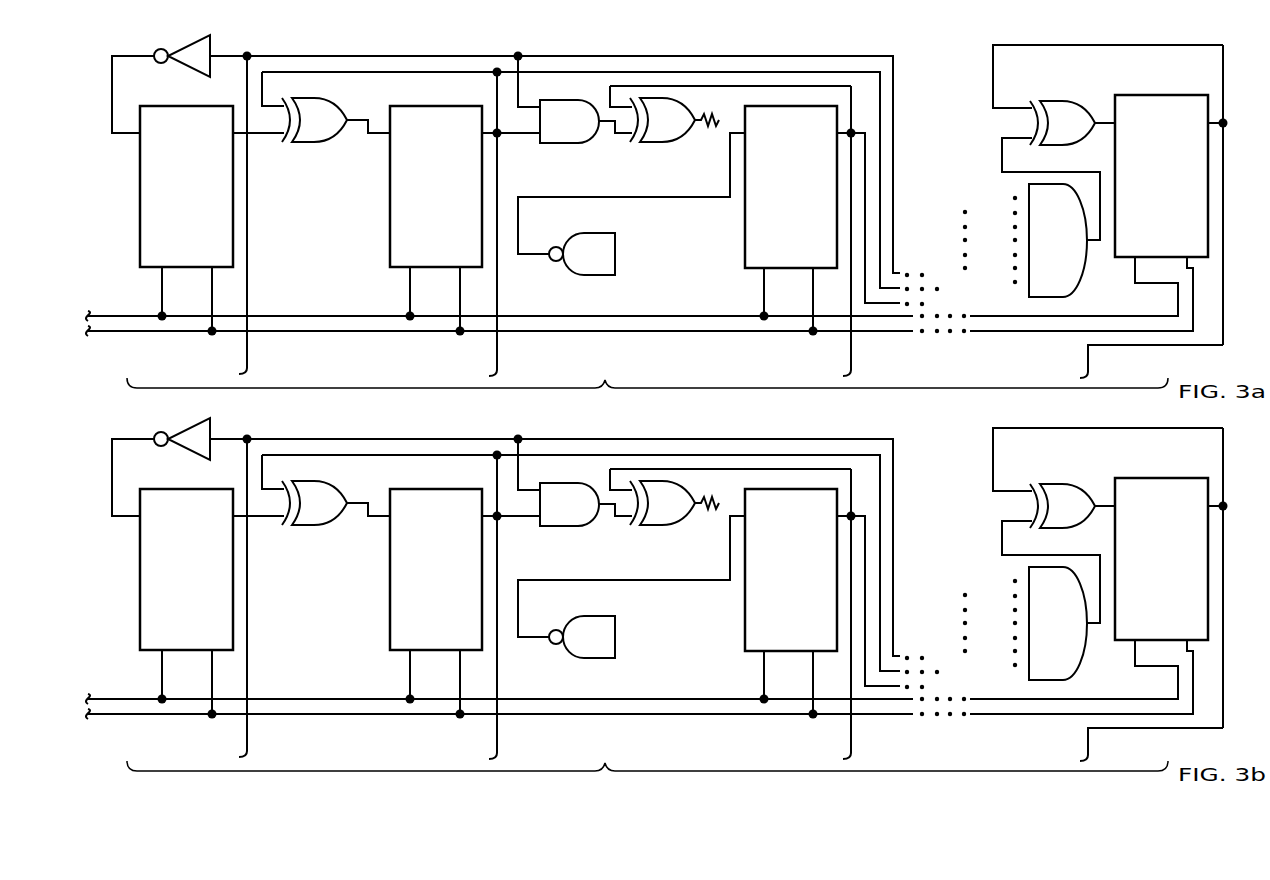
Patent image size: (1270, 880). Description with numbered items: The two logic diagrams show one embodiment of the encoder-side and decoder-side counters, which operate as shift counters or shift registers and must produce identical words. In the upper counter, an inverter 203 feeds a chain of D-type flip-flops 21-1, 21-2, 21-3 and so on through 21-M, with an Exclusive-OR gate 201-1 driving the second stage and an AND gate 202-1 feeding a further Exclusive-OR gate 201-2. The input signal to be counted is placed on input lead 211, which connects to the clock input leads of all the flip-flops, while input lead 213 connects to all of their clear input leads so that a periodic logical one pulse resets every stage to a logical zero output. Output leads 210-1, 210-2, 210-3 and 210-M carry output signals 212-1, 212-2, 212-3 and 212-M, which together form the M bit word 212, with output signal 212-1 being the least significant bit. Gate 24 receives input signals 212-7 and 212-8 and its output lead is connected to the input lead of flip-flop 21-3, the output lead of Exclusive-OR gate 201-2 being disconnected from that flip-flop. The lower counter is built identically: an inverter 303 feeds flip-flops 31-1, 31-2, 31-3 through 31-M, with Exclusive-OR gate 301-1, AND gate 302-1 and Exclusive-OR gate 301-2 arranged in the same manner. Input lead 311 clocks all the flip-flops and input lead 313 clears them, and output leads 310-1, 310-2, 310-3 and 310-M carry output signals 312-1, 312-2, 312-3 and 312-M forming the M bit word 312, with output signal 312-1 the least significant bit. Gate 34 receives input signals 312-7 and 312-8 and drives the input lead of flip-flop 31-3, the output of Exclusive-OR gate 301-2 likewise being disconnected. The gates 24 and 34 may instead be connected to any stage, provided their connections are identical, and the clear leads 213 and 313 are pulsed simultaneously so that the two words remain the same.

In FIG. 3a, the inverter 203 is at (182, 66).
In FIG. 3a, the D-type flip-flop 21-1 is at (210, 194).
In FIG. 3a, the Exclusive-OR gate 201-1 is at (320, 142).
In FIG. 3a, the D-type flip-flop 21-2 is at (459, 194).
In FIG. 3a, the AND gate 202-1 is at (562, 143).
In FIG. 3a, the Exclusive-OR gate 201-2 is at (668, 142).
In FIG. 3a, the D-type flip-flop 21-3 is at (814, 194).
In FIG. 3a, the gate 24 is at (597, 276).
In FIG. 3a, the input signal 212-7 is at (615, 240).
In FIG. 3a, the input signal 212-8 is at (615, 268).
In FIG. 3a, the input lead 211 is at (120, 315).
In FIG. 3a, the input lead 213 is at (107, 334).
In FIG. 3a, the output signal 212-1 is at (232, 364).
In FIG. 3a, the output lead 210-1 is at (249, 346).
In FIG. 3a, the output signal 212-2 is at (478, 354).
In FIG. 3a, the output lead 210-2 is at (499, 350).
In FIG. 3a, the output signal 212-3 is at (822, 355).
In FIG. 3a, the output lead 210-3 is at (853, 350).
In FIG. 3a, the output signal 212-M is at (1065, 356).
In FIG. 3a, the output lead 210-M is at (1090, 352).
In FIG. 3a, the D-type flip-flop 21-M is at (1186, 184).
In FIG. 3a, the output signal 312-1 is at (1029, 290).
In FIG. 3b, the output signal 312-1 is at (583, 713).
In FIG. 3a, the M-bit word 212 is at (647, 400).
In FIG. 3b, the inverter 303 is at (161, 467).
In FIG. 3b, the D-type flip-flop 31-1 is at (186, 601).
In FIG. 3b, the Exclusive-OR gate 301-1 is at (336, 521).
In FIG. 3b, the D-type flip-flop 31-2 is at (436, 601).
In FIG. 3b, the AND gate 302-1 is at (575, 500).
In FIG. 3b, the Exclusive-OR gate 301-2 is at (674, 521).
In FIG. 3b, the D-type flip-flop 31-3 is at (791, 601).
In FIG. 3b, the gate 34 is at (631, 605).
In FIG. 3b, the input signal 312-7 is at (665, 624).
In FIG. 3b, the input signal 312-8 is at (665, 653).
In FIG. 3b, the input lead 311 is at (632, 672).
In FIG. 3b, the input lead 313 is at (639, 695).
In FIG. 3b, the output lead 310-1 is at (281, 595).
In FIG. 3b, the output signal 312-2 is at (429, 746).
In FIG. 3b, the output lead 310-2 is at (531, 606).
In FIG. 3b, the output signal 312-3 is at (783, 749).
In FIG. 3b, the output lead 310-3 is at (884, 613).
In FIG. 3b, the output signal 312-M is at (1021, 748).
In FIG. 3b, the output lead 310-M is at (1155, 742).
In FIG. 3b, the D-type flip-flop 31-M is at (1169, 578).
In FIG. 3b, the M-bit word 312 is at (647, 783).